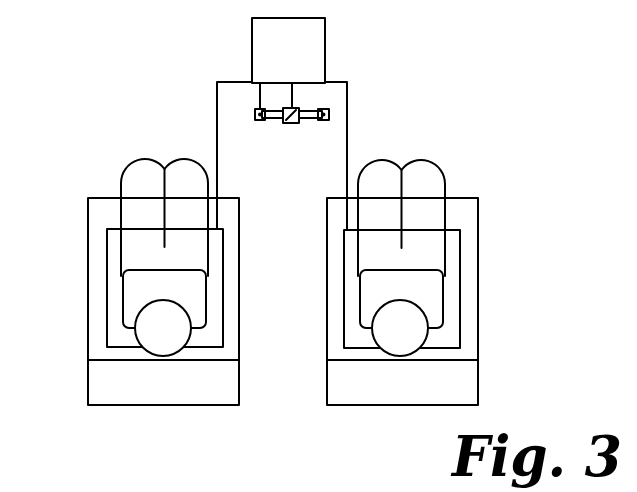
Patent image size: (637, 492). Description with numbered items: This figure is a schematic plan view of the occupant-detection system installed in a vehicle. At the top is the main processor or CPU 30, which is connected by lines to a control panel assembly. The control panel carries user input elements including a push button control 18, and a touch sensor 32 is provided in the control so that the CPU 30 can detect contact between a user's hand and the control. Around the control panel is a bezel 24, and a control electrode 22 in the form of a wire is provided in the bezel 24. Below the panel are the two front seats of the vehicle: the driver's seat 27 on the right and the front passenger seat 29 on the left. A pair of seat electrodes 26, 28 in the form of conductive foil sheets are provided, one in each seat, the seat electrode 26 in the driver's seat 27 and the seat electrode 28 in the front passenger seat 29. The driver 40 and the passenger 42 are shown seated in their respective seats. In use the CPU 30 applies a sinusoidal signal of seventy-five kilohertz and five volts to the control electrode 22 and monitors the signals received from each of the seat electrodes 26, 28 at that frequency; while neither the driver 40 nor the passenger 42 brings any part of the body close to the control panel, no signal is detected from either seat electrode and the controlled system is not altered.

The CPU 30 is at (252, 42).
The touch sensor 32 is at (294, 107).
The bezel 24 is at (330, 114).
The control electrode 22 is at (259, 121).
The push button control 18 is at (292, 124).
The passenger 42 is at (135, 299).
The driver 40 is at (427, 301).
The seat electrode 28 is at (120, 348).
The front passenger seat 29 is at (225, 388).
The seat electrode 26 is at (352, 348).
The driver's seat 27 is at (400, 388).